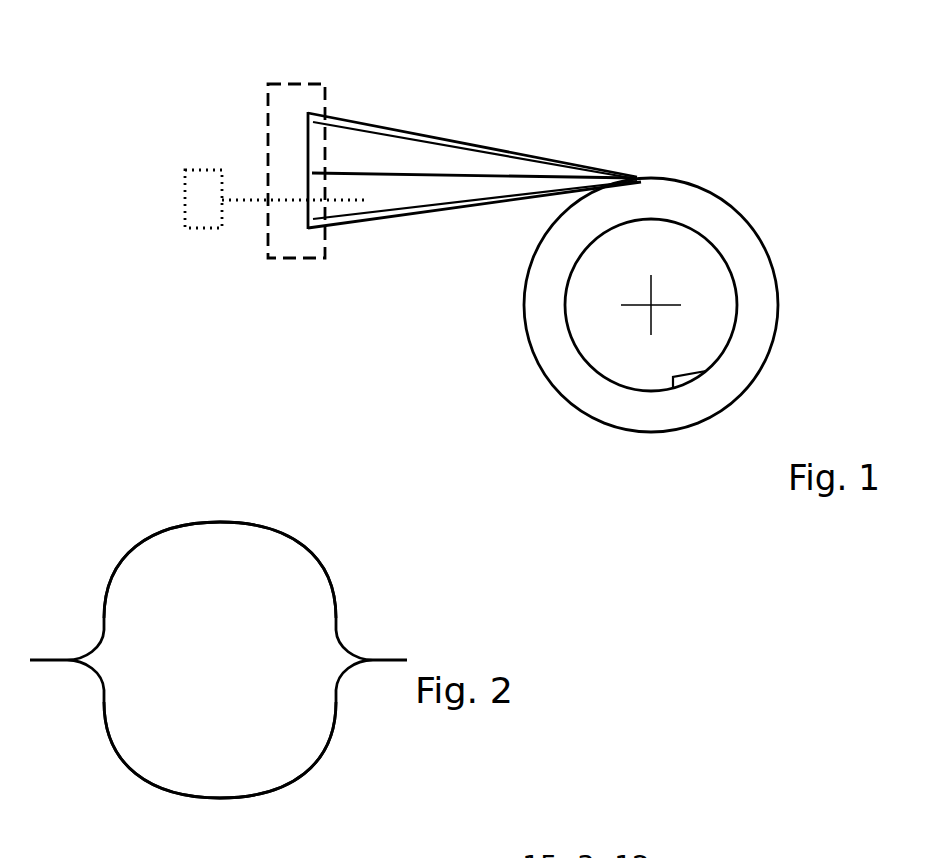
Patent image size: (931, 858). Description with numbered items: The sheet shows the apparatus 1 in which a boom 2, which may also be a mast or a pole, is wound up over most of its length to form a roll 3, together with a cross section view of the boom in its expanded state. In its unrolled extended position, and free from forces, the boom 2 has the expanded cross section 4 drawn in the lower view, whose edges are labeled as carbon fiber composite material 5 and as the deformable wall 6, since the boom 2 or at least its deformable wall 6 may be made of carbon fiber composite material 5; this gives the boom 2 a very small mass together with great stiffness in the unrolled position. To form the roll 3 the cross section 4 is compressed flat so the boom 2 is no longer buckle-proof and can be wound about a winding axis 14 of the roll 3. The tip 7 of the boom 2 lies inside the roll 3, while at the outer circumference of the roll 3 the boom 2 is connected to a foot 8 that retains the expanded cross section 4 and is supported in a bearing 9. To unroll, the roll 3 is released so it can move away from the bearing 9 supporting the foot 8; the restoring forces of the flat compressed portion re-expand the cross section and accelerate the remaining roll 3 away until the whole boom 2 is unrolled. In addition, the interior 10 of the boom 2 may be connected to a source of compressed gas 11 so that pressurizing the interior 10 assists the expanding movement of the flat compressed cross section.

In FIG. 1, the apparatus 1 is at (647, 107).
In FIG. 1, the boom 2 is at (451, 128).
In FIG. 2, the boom 2 is at (265, 527).
In FIG. 1, the roll 3 is at (738, 217).
In FIG. 2, the cross section 4 is at (145, 532).
In FIG. 2, the carbon fiber composite material 5 is at (298, 777).
In FIG. 2, the deformable wall 6 is at (145, 778).
In FIG. 1, the tip 7 is at (677, 389).
In FIG. 1, the foot 8 is at (347, 123).
In FIG. 1, the bearing 9 is at (291, 258).
In FIG. 1, the interior 10 is at (389, 182).
In FIG. 2, the interior 10 is at (270, 568).
In FIG. 1, the source of compressed gas 11 is at (206, 226).
In FIG. 1, the winding axis 14 is at (652, 305).